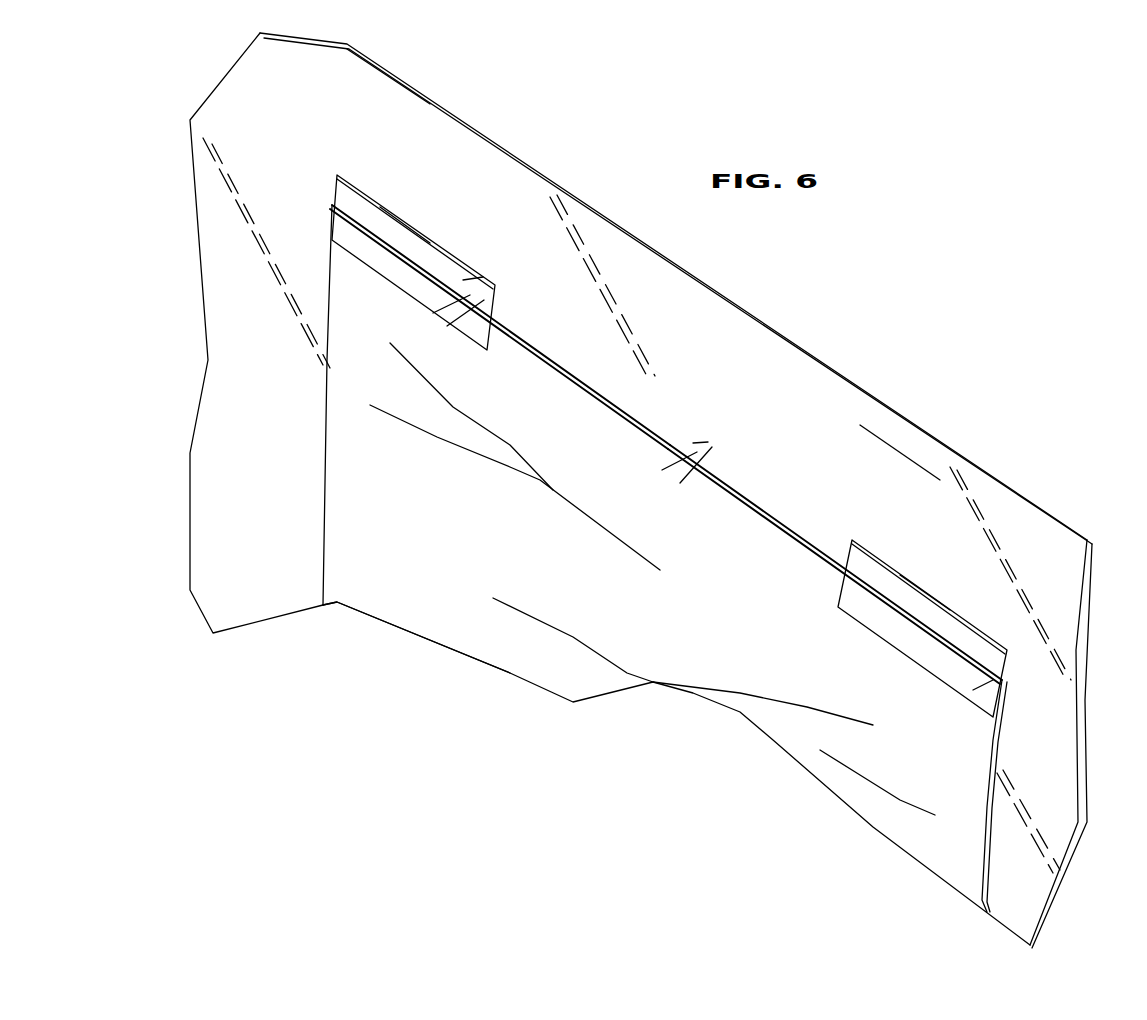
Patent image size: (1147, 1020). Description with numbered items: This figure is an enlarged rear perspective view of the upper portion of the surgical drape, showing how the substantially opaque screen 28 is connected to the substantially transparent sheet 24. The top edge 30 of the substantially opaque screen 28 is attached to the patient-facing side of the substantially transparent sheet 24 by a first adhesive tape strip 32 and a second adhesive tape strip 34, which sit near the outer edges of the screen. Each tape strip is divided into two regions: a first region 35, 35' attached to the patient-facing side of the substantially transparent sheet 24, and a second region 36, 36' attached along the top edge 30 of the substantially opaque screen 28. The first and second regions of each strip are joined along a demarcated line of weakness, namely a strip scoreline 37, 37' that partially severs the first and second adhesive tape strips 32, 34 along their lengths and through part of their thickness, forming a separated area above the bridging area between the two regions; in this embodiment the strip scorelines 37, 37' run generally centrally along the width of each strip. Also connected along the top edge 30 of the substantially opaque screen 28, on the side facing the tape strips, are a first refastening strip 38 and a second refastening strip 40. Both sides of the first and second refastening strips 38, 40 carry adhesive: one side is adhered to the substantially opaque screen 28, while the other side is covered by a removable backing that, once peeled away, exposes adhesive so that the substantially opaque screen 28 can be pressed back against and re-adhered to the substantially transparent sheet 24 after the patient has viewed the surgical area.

The substantially transparent sheet 24 is at (641, 490).
The substantially opaque screen 28 is at (726, 545).
The top edge of the substantially opaque screen 30 is at (630, 435).
The first adhesive tape strip 32 is at (975, 600).
The second adhesive tape strip 34 is at (469, 246).
The first region of the first adhesive tape strip 35 is at (995, 530).
The first region of the second adhesive tape strip 35' is at (470, 173).
The second region of the first adhesive tape strip 36 is at (901, 564).
The second region of the second adhesive tape strip 36' is at (405, 327).
The strip scoreline 37 is at (938, 511).
The strip scoreline 37' is at (422, 127).
The first refastening strip 38 is at (854, 746).
The second refastening strip 40 is at (416, 510).